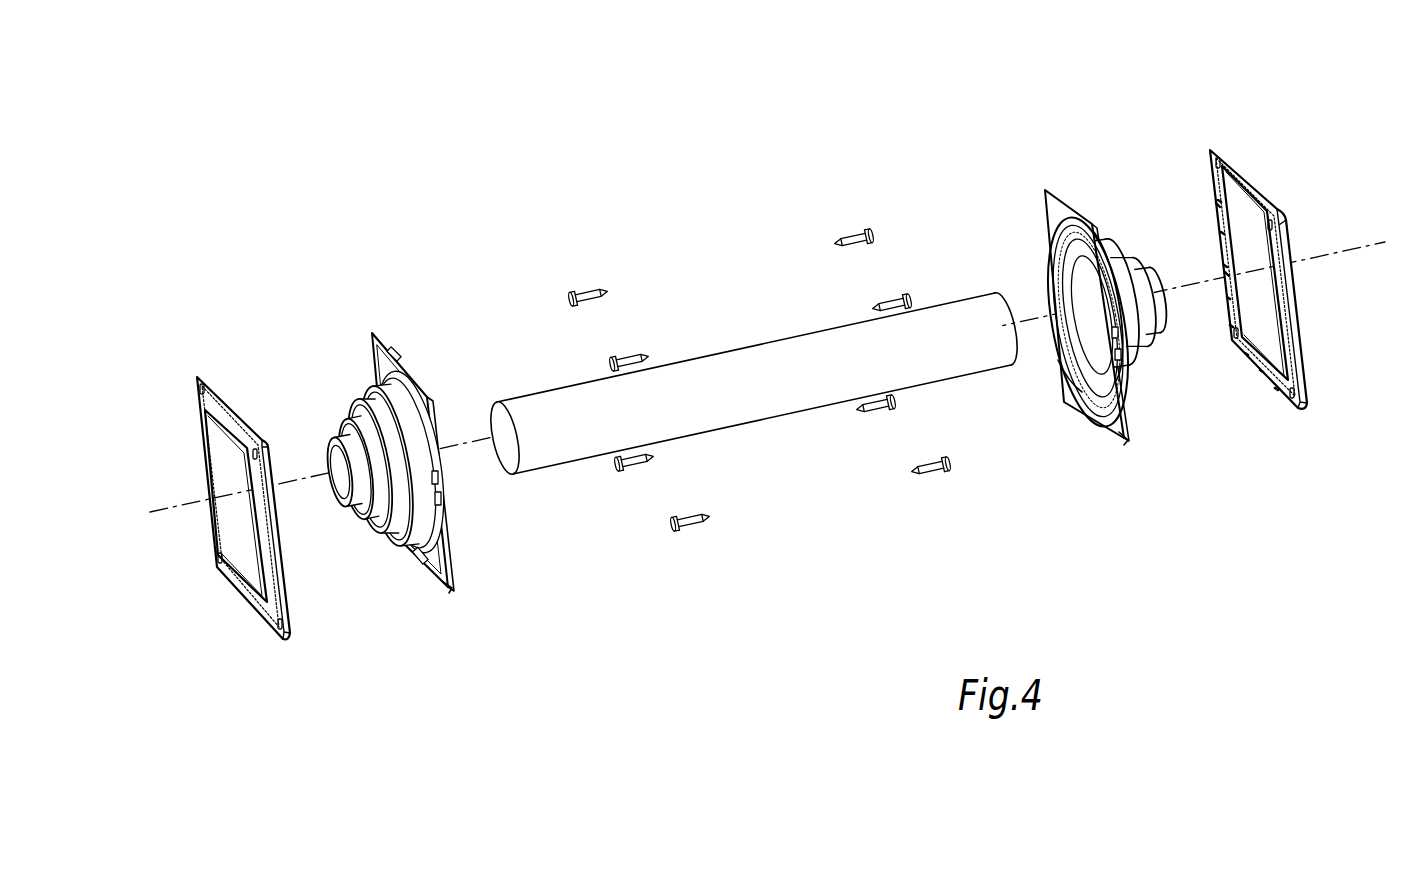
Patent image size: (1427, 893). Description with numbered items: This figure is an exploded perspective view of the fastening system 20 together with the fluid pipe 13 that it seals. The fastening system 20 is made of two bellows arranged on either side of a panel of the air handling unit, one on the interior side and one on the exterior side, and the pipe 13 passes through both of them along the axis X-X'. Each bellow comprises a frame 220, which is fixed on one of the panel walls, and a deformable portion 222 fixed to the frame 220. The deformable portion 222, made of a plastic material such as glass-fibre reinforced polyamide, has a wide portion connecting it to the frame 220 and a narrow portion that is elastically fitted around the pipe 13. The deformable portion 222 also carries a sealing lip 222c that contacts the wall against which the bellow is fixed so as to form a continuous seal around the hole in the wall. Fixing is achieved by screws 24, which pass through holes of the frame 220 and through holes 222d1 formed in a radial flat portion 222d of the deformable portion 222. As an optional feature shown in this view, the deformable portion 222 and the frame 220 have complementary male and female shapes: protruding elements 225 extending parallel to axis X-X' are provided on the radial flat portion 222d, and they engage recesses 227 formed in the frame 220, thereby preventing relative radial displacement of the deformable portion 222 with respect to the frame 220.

The fastening system 20 is at (512, 190).
The pipe 13 is at (753, 383).
The screws 24 is at (635, 357).
The frame 220 is at (197, 376).
The deformable portion 222 is at (370, 332).
The sealing lip 222c is at (1077, 385).
The radial flat portion 222d is at (450, 572).
The holes 222d1 is at (438, 588).
The protruding elements 225 is at (400, 366).
The recesses 227 is at (1216, 273).